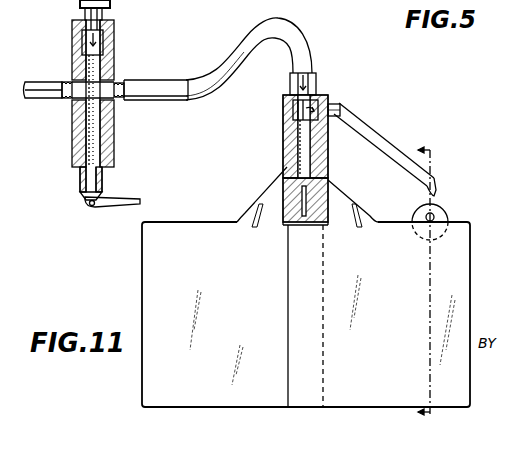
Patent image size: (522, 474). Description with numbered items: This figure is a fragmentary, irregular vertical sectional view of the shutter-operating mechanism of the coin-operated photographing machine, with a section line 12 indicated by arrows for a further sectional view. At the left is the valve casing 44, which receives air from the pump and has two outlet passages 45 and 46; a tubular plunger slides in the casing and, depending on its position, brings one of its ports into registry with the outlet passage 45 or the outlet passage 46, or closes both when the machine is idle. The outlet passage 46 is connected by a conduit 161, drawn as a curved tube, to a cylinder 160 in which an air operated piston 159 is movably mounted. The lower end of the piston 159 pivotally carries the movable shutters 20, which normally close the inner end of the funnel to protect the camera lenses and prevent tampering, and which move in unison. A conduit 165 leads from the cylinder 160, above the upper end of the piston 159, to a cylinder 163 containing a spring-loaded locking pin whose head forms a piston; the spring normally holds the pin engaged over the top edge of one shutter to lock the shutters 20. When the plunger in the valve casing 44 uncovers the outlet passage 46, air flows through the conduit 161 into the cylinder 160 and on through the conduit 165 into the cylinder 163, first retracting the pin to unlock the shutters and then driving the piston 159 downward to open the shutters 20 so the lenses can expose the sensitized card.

The section line 12 is at (435, 285).
The movable shutters 20 is at (168, 272).
The valve casing 44 is at (107, 137).
The outlet passage 45 is at (60, 100).
The outlet passage 46 is at (123, 82).
The air operated piston 159 is at (318, 178).
The cylinder 160 is at (292, 117).
The conduit 161 is at (189, 100).
The cylinder 163 is at (438, 216).
The conduit 165 is at (380, 143).